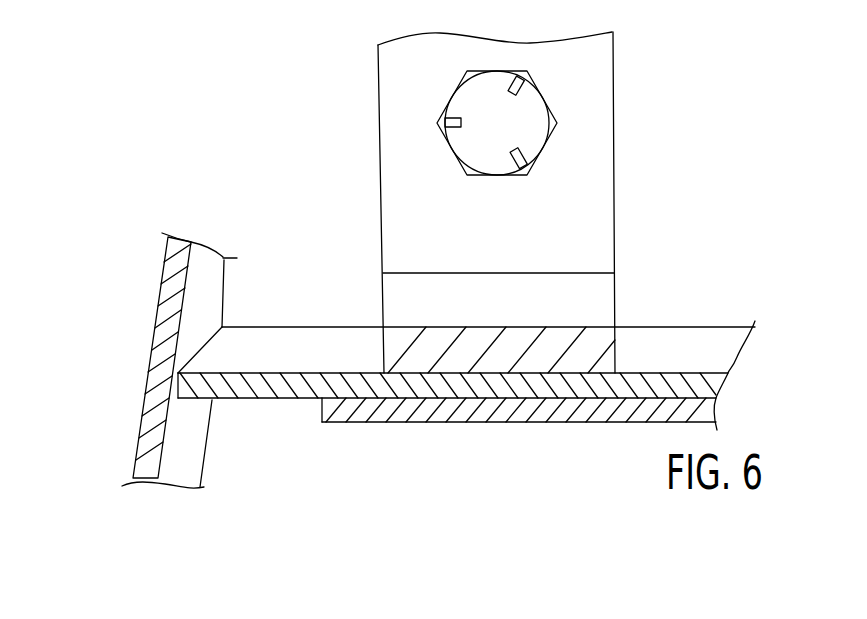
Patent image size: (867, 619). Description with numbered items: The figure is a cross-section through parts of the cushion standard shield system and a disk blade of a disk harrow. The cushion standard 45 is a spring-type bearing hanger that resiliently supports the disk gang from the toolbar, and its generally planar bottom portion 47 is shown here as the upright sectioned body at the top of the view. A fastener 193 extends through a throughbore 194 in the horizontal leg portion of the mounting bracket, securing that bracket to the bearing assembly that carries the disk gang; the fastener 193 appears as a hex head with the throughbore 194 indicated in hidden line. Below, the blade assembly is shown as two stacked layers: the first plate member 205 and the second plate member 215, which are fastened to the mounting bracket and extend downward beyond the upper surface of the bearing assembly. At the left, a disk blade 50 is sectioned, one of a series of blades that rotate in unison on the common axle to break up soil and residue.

The cushion standard 45 is at (626, 90).
The planar bottom portion 47 is at (588, 232).
The disk blade 50 is at (162, 298).
The fastener 193 is at (475, 137).
The throughbore 194 is at (545, 153).
The first plate member 205 is at (284, 398).
The second plate member 215 is at (455, 422).